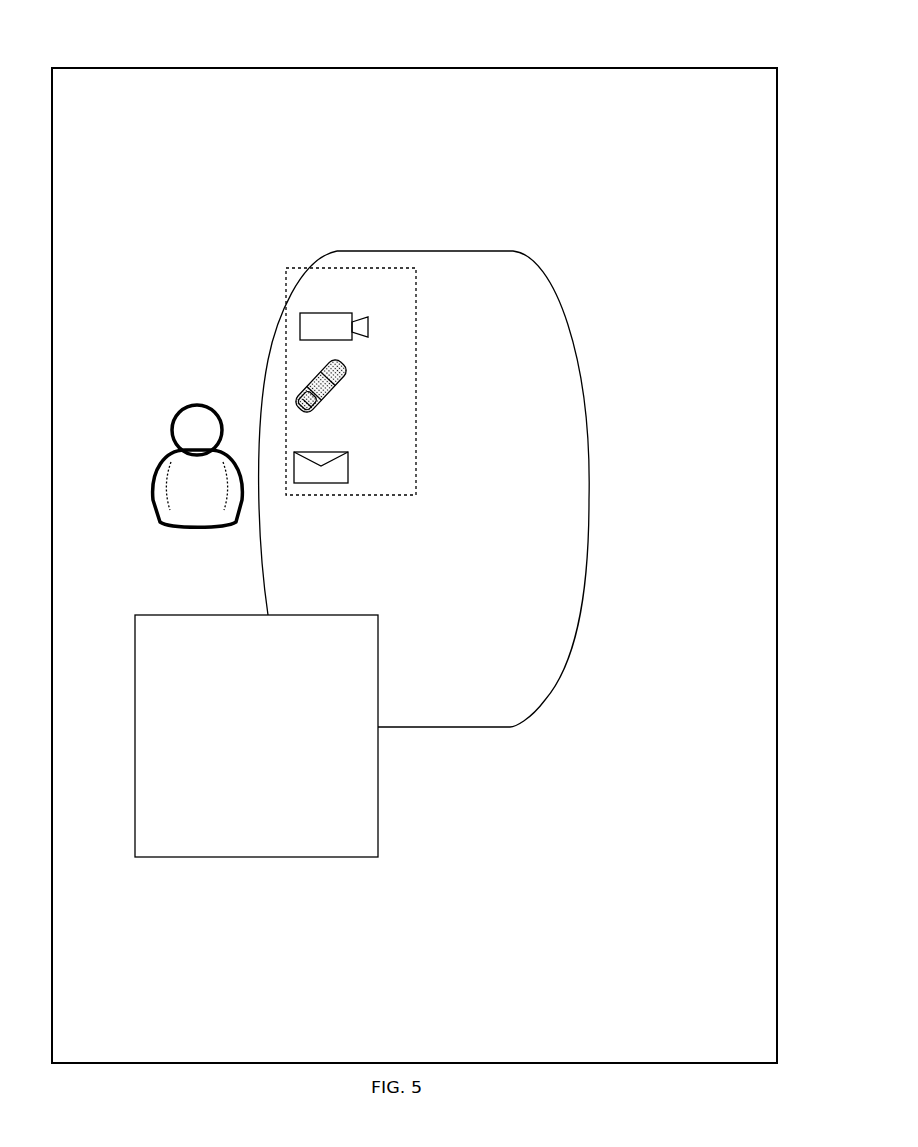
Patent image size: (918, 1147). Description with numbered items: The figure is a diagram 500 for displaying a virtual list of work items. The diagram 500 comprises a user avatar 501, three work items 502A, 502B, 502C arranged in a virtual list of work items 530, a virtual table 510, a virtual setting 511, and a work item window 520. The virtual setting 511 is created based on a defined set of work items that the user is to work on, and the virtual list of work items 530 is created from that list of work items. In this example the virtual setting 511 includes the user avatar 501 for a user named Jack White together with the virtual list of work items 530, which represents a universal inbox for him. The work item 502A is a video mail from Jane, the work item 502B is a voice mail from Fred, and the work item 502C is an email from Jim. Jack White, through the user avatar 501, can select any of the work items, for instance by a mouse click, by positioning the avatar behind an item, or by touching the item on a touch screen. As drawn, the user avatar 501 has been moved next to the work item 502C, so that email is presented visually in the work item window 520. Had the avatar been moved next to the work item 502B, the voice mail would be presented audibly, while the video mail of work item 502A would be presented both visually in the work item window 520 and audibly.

The diagram 500 is at (401, 52).
The virtual setting 511 is at (566, 68).
The virtual table 510 is at (510, 251).
The virtual list of work items 530 is at (415, 350).
The work item 502A is at (335, 313).
The work item 502B is at (347, 367).
The work item 502C is at (340, 451).
The user avatar 501 is at (199, 403).
The work item window 520 is at (165, 615).